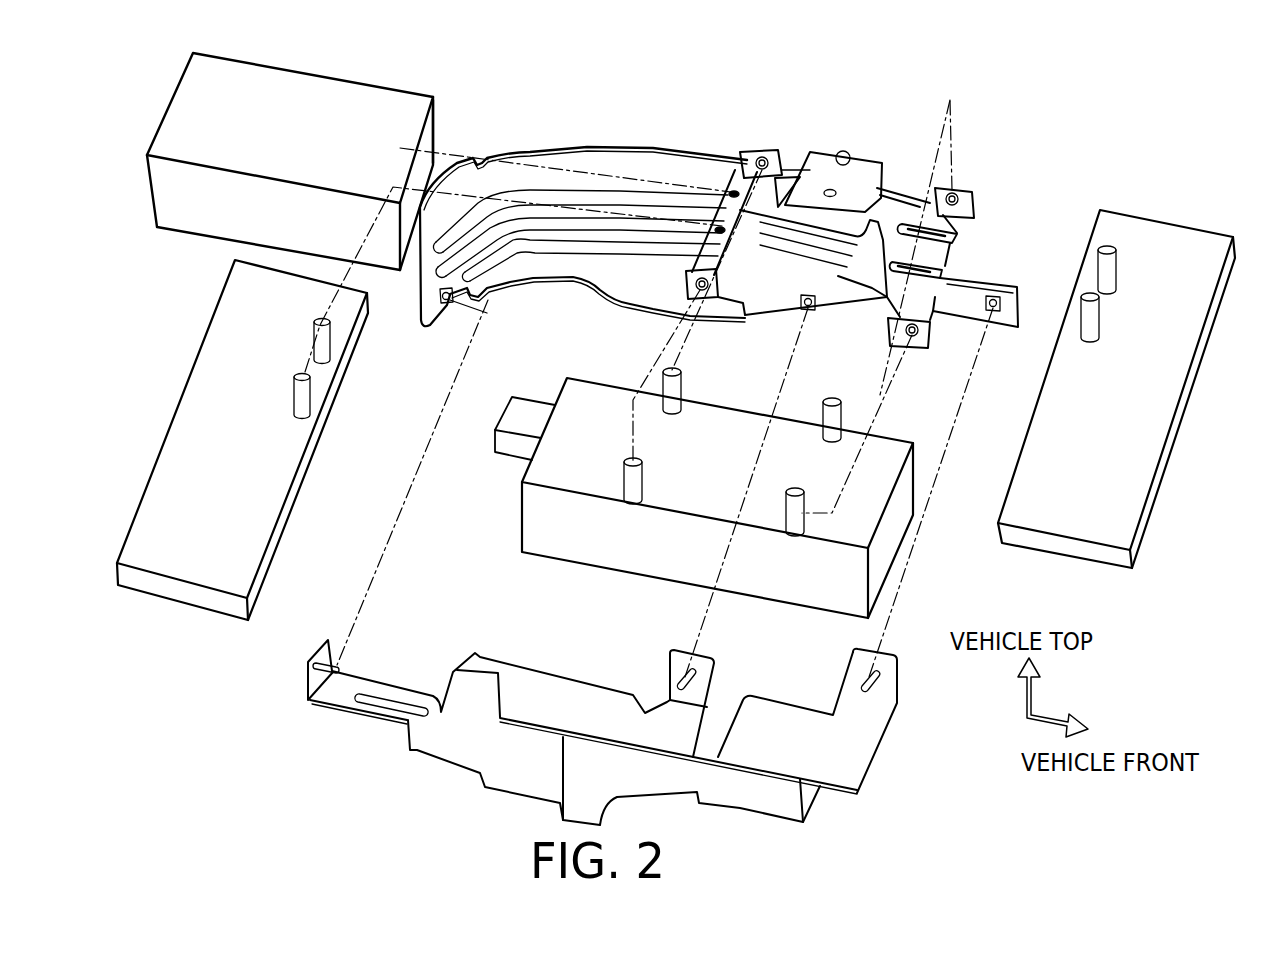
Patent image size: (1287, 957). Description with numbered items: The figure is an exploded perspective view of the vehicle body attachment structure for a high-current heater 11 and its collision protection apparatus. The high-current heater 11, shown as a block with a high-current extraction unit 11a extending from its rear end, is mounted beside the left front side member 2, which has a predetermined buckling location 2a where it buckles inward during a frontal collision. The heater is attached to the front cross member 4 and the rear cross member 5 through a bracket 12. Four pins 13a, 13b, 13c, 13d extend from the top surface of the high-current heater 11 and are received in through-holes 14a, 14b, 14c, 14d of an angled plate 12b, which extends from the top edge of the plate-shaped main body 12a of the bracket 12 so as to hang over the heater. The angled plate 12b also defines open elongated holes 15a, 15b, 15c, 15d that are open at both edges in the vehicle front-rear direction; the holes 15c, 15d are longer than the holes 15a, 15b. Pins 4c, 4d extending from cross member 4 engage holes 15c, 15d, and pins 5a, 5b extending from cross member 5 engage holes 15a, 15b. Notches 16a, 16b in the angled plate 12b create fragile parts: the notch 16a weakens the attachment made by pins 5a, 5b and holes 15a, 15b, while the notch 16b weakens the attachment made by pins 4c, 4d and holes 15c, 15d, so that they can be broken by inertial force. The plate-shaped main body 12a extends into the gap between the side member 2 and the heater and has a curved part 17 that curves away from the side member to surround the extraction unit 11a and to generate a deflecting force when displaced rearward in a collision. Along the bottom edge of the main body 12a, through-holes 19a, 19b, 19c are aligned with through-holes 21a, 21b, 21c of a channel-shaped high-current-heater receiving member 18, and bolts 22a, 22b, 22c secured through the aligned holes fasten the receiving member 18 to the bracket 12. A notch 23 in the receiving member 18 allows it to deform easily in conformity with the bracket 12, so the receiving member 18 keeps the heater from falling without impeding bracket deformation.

The left front side member 2 is at (411, 91).
The predetermined buckling location 2a is at (430, 128).
The front cross member 4 is at (1142, 208).
The pin 4c is at (1101, 319).
The pin 4d is at (1118, 268).
The rear cross member 5 is at (190, 600).
The pin 5a is at (295, 391).
The pin 5b is at (312, 336).
The high-current heater 11 is at (520, 520).
The high-current extraction unit 11a is at (527, 395).
The bracket 12 is at (582, 203).
The plate-shaped main body 12a is at (628, 162).
The angled plate 12b is at (858, 178).
The pin 13a is at (643, 476).
The pin 13b is at (682, 384).
The pin 13c is at (798, 502).
The pin 13d is at (837, 404).
The through-hole 14a is at (720, 286).
The through-hole 14b is at (762, 155).
The through-hole 14c is at (926, 330).
The through-hole 14d is at (962, 190).
The open elongated hole 15a is at (716, 226).
The open elongated hole 15b is at (731, 190).
The open elongated hole 15c is at (925, 264).
The open elongated hole 15d is at (950, 231).
The notch 16a is at (795, 170).
The notch 16b is at (870, 290).
The curved part 17 is at (460, 176).
The high-current-heater receiving member 18 is at (841, 800).
The through-hole 19a is at (1000, 312).
The through-hole 19b is at (806, 312).
The through-hole 19c is at (448, 306).
The through-hole 21a is at (882, 682).
The through-hole 21b is at (676, 676).
The through-hole 21c is at (318, 682).
The bolt 22a is at (880, 688).
The bolt 22b is at (694, 683).
The bolt 22c is at (340, 668).
The notch 23 is at (722, 732).